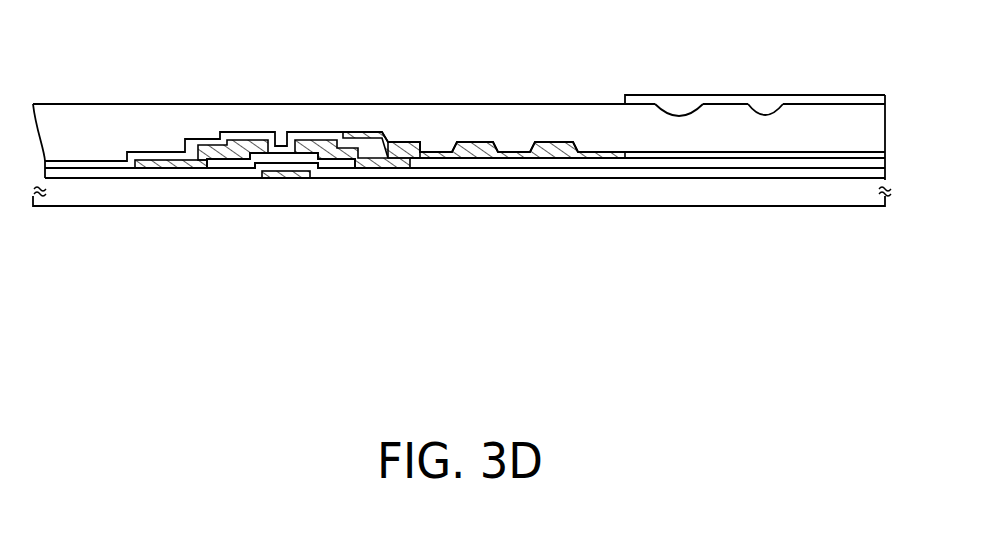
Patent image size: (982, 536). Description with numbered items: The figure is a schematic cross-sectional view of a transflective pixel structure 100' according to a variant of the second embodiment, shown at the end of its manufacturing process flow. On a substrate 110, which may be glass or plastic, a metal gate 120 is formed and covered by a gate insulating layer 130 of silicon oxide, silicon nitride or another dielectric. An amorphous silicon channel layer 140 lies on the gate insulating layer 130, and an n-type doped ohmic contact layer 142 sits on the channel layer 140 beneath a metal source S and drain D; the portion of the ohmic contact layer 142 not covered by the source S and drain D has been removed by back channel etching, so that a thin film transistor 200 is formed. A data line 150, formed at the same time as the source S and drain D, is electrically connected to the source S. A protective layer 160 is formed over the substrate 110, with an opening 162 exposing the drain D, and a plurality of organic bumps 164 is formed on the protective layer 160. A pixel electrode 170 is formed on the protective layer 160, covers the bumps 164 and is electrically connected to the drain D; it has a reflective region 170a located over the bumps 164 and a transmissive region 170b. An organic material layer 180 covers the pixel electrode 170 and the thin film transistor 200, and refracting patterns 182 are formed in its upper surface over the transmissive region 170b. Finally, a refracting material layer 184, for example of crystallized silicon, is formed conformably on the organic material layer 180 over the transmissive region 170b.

The transflective pixel structure 100' is at (462, 190).
The substrate 110 is at (738, 185).
The gate 120 is at (292, 178).
The gate insulating layer 130 is at (419, 172).
The channel layer 140 is at (304, 150).
The source S is at (240, 140).
The drain D is at (318, 138).
The ohmic contact layer 142 is at (333, 162).
The data line 150 is at (153, 168).
The protective layer 160 is at (363, 132).
The opening 162 is at (398, 143).
The bumps 164 is at (472, 142).
The pixel electrode 170 is at (614, 179).
The reflective region 170a is at (585, 157).
The transmissive region 170b is at (648, 156).
The organic material layer 180 is at (837, 117).
The refracting patterns 182 is at (678, 110).
The refracting material layer 184 is at (633, 95).
The thin film transistor 200 is at (277, 143).